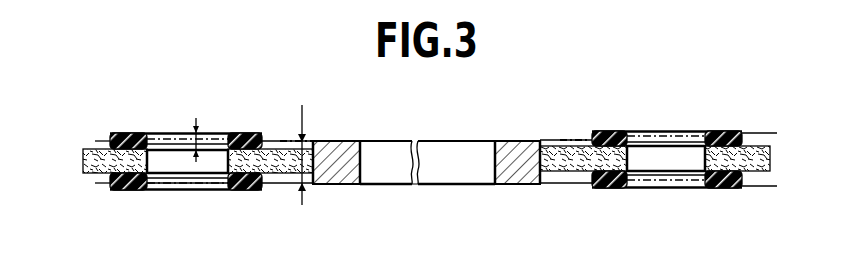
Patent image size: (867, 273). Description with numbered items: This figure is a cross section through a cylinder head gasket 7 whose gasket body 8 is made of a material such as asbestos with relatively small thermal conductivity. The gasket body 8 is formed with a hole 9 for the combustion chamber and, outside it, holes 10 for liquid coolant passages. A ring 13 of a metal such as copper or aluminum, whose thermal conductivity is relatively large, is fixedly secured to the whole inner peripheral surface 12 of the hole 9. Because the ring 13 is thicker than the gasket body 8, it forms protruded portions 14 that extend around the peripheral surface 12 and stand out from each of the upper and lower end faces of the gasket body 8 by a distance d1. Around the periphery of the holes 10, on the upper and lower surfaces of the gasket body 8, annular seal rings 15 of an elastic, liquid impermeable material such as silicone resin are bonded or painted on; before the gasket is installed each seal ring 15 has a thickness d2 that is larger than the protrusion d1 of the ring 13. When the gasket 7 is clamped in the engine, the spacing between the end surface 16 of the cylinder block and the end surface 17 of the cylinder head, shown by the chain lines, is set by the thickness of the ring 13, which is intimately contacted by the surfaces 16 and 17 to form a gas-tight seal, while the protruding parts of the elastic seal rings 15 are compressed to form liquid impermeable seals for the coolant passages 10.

The cylinder head gasket 7 is at (329, 193).
The gasket body 8 is at (280, 183).
The hole for combustion chamber 9 is at (457, 152).
The hole for liquid coolant passage 10 is at (161, 150).
The inner peripheral surface 12 is at (336, 152).
The ring 13 is at (519, 176).
The protruded portion 14 is at (331, 141).
The annular seal ring 15 is at (131, 190).
The end surface of the cylinder block 16 is at (208, 185).
The end surface of the cylinder head 17 is at (283, 140).
The protrusion distance d1 is at (315, 158).
The seal ring thickness d2 is at (208, 125).